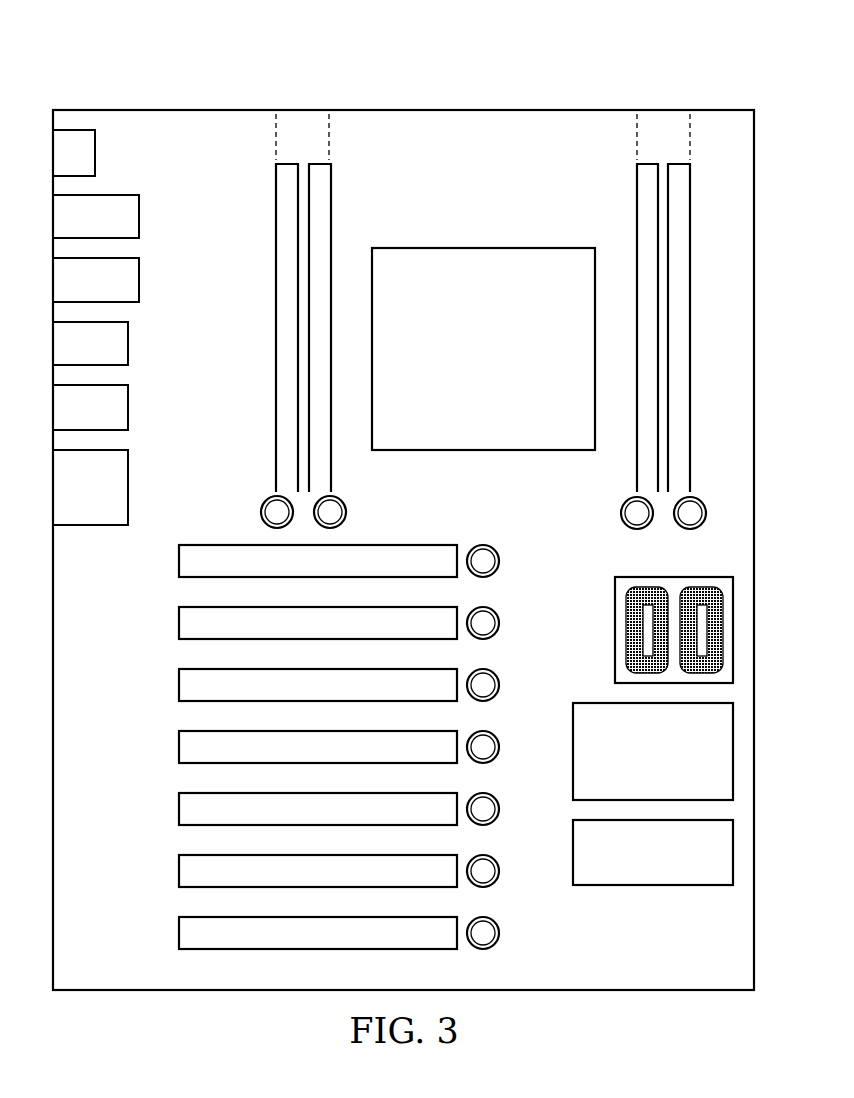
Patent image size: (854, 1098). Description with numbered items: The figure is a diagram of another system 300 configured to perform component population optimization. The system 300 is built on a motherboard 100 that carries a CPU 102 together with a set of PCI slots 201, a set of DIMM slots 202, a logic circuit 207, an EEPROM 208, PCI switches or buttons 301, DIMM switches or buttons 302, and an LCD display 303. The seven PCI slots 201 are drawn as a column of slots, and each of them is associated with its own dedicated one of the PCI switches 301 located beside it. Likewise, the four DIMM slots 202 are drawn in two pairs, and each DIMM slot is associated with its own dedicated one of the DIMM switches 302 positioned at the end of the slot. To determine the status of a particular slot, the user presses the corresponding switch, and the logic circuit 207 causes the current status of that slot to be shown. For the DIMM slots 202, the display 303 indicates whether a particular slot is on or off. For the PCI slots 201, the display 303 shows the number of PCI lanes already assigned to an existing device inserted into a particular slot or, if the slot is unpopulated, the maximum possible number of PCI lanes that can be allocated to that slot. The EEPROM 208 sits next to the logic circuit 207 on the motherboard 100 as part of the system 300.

The system 300 is at (198, 66).
The motherboard 100 is at (222, 326).
The CPU 102 is at (466, 380).
The DIMM slots 202 is at (328, 102).
The DIMM switches or buttons 302 is at (252, 502).
The PCI slots 201 is at (157, 546).
The PCI switches or buttons 301 is at (500, 536).
The LCD display 303 is at (615, 629).
The logic circuit 207 is at (573, 752).
The EEPROM 208 is at (653, 886).